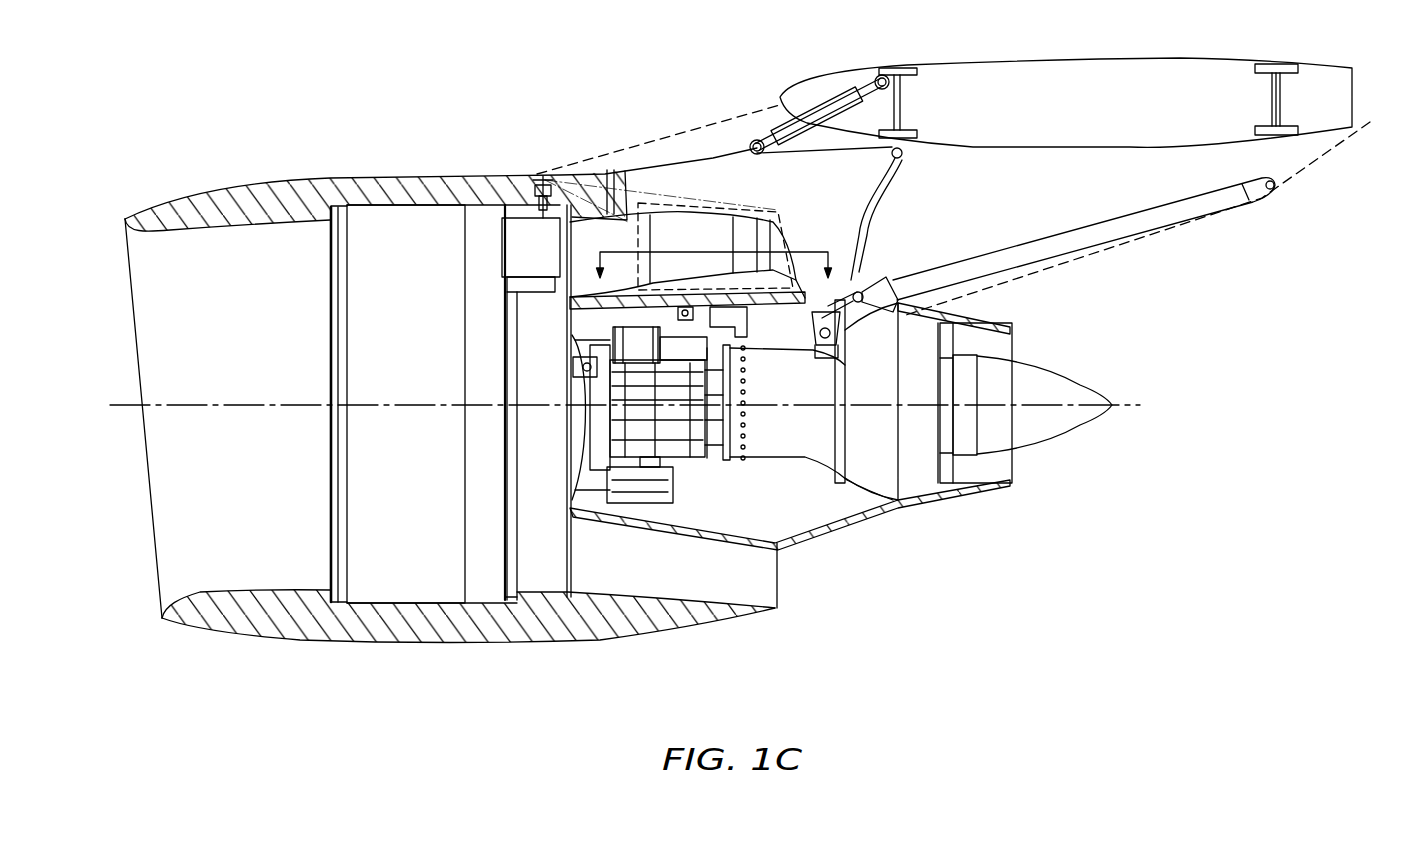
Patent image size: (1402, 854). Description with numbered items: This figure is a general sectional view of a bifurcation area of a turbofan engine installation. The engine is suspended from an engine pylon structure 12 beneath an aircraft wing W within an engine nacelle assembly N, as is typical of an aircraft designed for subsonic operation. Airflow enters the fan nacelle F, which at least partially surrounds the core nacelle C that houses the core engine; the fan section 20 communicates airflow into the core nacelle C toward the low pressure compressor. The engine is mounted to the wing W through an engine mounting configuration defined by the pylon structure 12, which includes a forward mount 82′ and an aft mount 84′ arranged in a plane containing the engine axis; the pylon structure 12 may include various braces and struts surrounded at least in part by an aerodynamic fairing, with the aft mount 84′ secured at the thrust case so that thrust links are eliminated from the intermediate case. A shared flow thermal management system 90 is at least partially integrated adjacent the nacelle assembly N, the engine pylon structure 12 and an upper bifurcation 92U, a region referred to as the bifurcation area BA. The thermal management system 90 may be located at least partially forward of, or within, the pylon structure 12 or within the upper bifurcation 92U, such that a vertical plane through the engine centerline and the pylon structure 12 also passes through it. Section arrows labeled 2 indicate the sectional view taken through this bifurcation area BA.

The fan nacelle F is at (200, 206).
The fan section 20 is at (404, 222).
The forward mount 82′ is at (543, 176).
The shared flow thermal management system 90 is at (662, 113).
The upper bifurcation 92U is at (692, 240).
The bifurcation area BA is at (731, 187).
The section line 2- 2 is at (706, 280).
The aircraft wing W is at (1105, 118).
The aft mount 84′ is at (888, 277).
The engine pylon structure 12 is at (1140, 243).
The core nacelle C is at (876, 518).
The engine nacelle assembly N is at (470, 659).